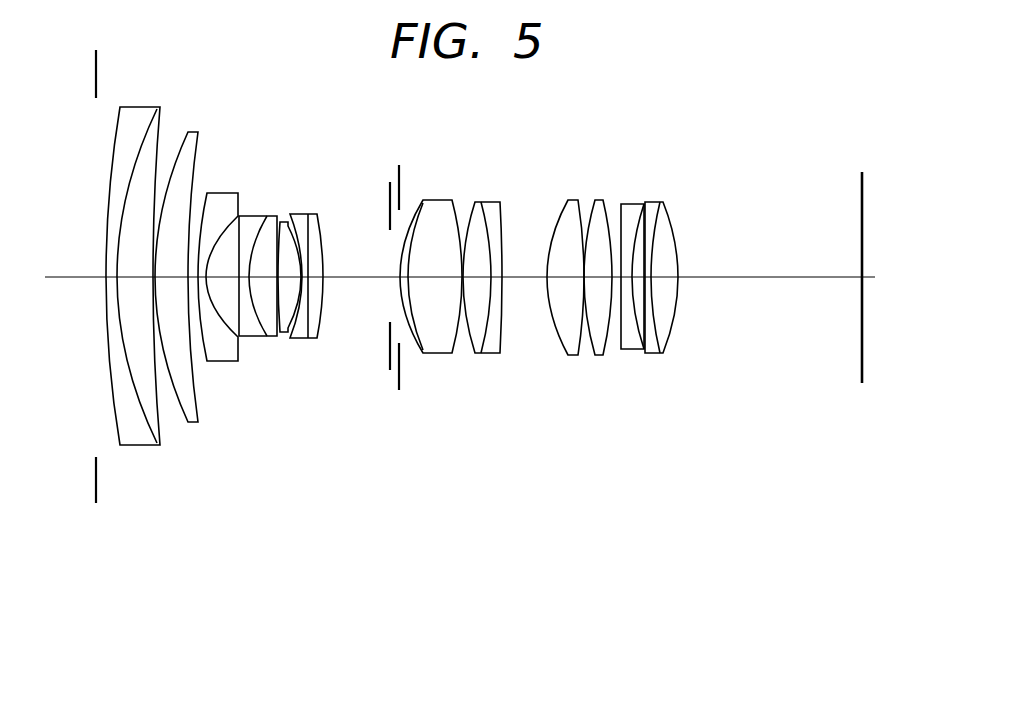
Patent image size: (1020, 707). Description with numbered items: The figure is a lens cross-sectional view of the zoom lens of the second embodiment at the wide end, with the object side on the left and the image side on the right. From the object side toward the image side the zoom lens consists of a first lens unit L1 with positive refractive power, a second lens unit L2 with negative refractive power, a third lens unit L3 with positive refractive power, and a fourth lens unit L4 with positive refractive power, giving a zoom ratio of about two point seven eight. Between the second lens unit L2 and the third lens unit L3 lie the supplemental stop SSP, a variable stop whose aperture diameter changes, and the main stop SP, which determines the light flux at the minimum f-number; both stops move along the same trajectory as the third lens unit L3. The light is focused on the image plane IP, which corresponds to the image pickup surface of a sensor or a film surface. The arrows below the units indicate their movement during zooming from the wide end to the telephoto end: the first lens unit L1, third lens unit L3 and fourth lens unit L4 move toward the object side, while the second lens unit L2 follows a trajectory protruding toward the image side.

The first lens unit L1 is at (68, 608).
The second lens unit L2 is at (242, 608).
The third lens unit L3 is at (400, 605).
The fourth lens unit L4 is at (513, 605).
The main stop SP is at (401, 172).
The supplemental stop SSP is at (390, 186).
The image plane IP is at (861, 182).